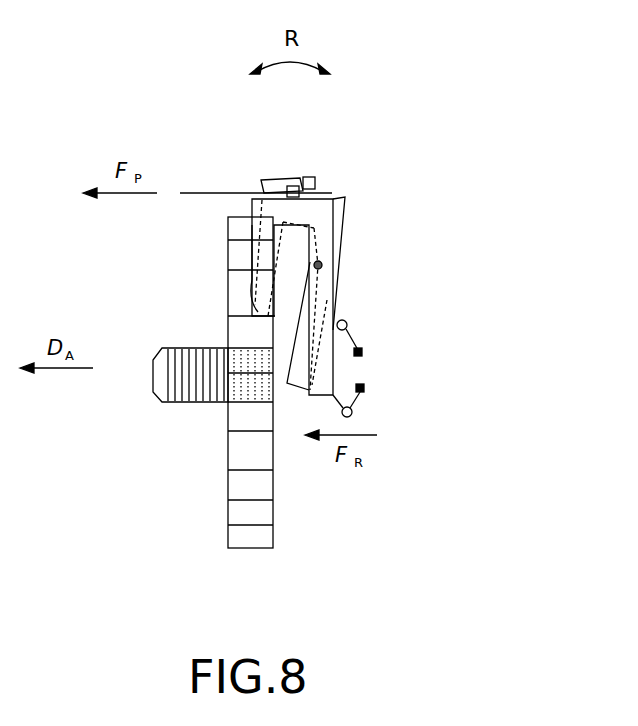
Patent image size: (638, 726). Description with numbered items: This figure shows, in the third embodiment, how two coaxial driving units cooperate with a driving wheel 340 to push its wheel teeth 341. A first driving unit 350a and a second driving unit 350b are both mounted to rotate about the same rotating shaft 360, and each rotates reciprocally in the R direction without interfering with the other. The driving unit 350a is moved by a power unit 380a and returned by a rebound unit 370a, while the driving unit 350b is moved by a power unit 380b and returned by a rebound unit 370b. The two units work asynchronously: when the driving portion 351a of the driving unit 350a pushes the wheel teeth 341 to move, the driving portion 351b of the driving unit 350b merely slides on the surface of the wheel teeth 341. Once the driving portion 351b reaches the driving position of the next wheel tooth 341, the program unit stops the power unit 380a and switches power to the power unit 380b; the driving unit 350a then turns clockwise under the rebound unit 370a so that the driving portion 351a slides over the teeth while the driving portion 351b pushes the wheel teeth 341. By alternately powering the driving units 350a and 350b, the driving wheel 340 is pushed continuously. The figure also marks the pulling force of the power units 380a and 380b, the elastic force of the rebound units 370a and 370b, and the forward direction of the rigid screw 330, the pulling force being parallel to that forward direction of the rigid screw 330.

The rigid screw 330 is at (172, 404).
The driving wheel 340 is at (250, 550).
The wheel teeth 341 is at (268, 497).
The driving unit 350a is at (340, 213).
The driving unit 350b is at (336, 197).
The driving portion 351a is at (260, 305).
The driving portion 351b is at (258, 258).
The rotating shaft 360 is at (322, 265).
The rebound unit 370a is at (353, 412).
The rebound unit 370b is at (348, 325).
The power unit 380a is at (190, 193).
The power unit 380b is at (277, 180).